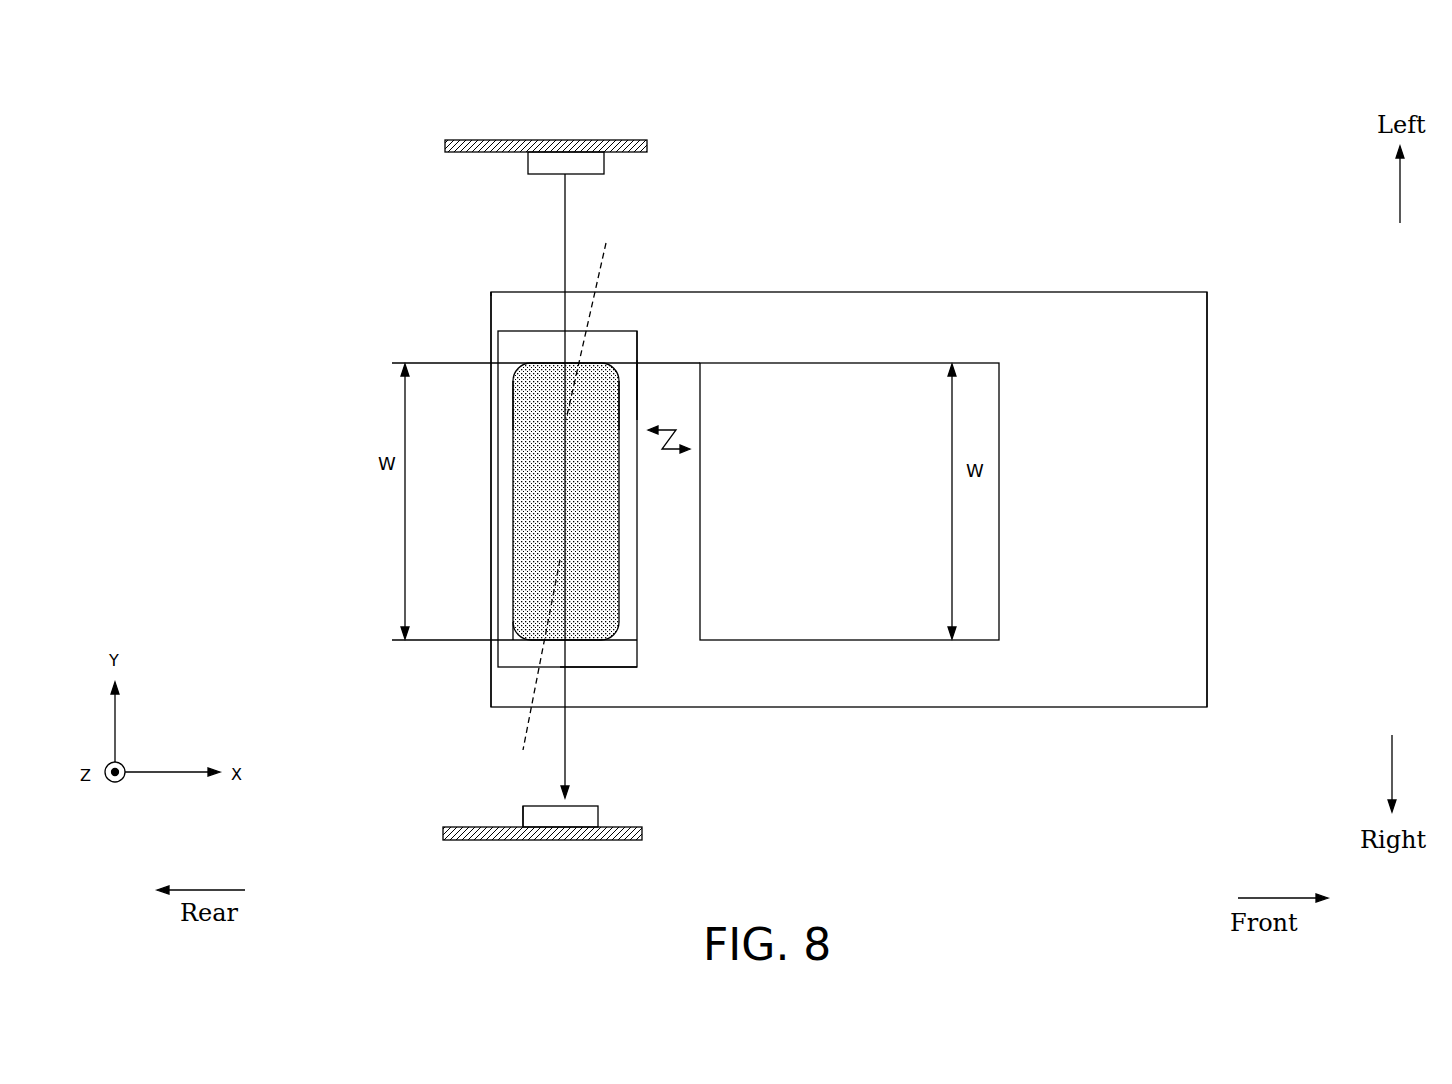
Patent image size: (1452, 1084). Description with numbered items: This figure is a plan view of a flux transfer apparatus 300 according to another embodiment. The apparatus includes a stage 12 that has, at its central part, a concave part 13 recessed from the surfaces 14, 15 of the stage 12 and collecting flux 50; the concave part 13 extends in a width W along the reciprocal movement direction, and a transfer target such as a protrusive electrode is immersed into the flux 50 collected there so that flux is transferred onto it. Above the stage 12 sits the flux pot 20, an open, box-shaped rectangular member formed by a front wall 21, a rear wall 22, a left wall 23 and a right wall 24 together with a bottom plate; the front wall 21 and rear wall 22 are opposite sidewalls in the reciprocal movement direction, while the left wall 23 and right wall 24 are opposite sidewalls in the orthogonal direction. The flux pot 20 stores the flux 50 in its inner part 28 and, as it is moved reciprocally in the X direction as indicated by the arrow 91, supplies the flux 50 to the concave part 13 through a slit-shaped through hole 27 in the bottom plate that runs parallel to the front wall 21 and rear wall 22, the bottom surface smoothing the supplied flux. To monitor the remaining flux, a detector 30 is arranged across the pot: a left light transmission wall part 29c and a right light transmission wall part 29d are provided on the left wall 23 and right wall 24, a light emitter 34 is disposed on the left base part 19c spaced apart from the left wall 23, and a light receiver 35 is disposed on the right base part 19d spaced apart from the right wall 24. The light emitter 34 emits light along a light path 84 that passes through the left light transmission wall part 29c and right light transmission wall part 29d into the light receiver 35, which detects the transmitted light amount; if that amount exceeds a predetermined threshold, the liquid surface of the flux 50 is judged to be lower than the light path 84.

The flux transfer apparatus 300 is at (194, 189).
The stage 12 is at (1207, 521).
The concave part 13 is at (922, 363).
The surface 14 is at (553, 362).
The surface 15 is at (1122, 313).
The left base part 19c is at (448, 143).
The right base part 19d is at (450, 840).
The flux pot 20 is at (491, 318).
The front wall 21 is at (638, 368).
The rear wall 22 is at (498, 340).
The left wall 23 is at (608, 420).
The right wall 24 is at (588, 668).
The through hole 27 is at (516, 641).
The inner part 28 is at (517, 427).
The left light transmission wall part 29c is at (598, 316).
The right light transmission wall part 29d is at (536, 668).
The detector 30 is at (523, 816).
The light emitter 34 is at (605, 163).
The light receiver 35 is at (598, 817).
The flux 50 is at (637, 368).
The light path 84 is at (566, 198).
The arrow 91 is at (668, 424).